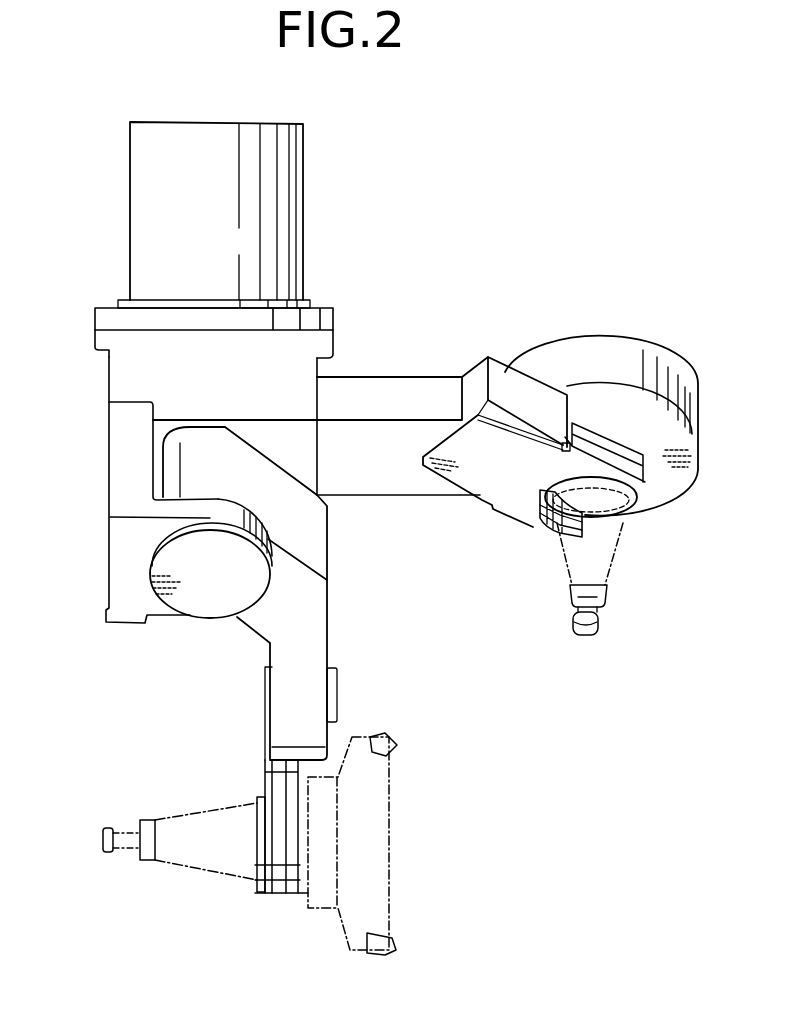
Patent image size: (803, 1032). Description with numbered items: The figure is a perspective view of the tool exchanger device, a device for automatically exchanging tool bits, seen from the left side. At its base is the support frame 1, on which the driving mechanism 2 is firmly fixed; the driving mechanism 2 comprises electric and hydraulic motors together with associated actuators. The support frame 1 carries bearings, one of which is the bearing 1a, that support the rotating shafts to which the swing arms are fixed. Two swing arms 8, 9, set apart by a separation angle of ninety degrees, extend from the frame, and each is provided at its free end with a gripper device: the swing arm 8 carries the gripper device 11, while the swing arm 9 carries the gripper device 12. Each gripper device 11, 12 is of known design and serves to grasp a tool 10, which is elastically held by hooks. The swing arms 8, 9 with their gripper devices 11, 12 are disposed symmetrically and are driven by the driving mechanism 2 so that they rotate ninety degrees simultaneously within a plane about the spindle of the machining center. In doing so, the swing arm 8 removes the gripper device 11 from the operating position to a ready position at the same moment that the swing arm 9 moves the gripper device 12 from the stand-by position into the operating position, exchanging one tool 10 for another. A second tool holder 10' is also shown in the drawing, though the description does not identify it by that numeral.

The support frame 1 is at (120, 475).
The bearing 1a is at (237, 515).
The driving mechanism 2 is at (293, 195).
The swing arm 8 is at (317, 610).
The swing arm 9 is at (405, 387).
The tool 10 is at (291, 844).
The tool holder 10' is at (632, 579).
The gripper device 11 is at (268, 782).
The gripper device 12 is at (543, 527).